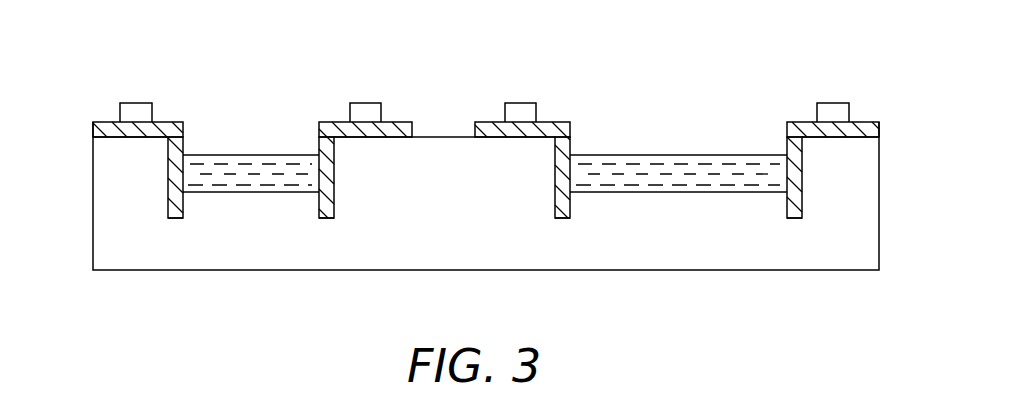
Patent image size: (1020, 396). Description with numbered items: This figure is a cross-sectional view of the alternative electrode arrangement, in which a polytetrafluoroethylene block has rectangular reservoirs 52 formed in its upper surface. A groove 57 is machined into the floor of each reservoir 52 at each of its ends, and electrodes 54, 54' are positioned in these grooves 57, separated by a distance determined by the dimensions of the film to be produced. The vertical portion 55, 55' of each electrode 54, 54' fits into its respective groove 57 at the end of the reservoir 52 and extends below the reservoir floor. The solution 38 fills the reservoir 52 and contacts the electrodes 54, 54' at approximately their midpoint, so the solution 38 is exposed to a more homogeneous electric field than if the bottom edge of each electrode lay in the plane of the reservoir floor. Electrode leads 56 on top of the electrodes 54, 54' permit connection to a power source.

The solution 38 is at (253, 183).
The rectangular reservoir 52 is at (227, 146).
The electrode 54 is at (597, 89).
The electrode 54' is at (309, 85).
The vertical portion 55 is at (560, 201).
The vertical portion 55' is at (367, 201).
The electrode lead 56 is at (131, 103).
The groove 57 is at (173, 219).